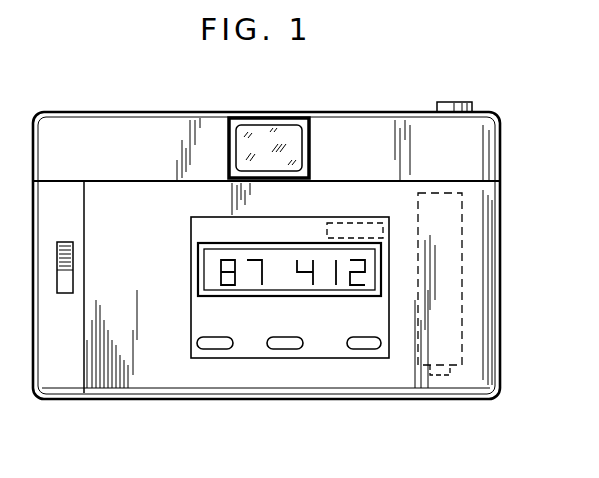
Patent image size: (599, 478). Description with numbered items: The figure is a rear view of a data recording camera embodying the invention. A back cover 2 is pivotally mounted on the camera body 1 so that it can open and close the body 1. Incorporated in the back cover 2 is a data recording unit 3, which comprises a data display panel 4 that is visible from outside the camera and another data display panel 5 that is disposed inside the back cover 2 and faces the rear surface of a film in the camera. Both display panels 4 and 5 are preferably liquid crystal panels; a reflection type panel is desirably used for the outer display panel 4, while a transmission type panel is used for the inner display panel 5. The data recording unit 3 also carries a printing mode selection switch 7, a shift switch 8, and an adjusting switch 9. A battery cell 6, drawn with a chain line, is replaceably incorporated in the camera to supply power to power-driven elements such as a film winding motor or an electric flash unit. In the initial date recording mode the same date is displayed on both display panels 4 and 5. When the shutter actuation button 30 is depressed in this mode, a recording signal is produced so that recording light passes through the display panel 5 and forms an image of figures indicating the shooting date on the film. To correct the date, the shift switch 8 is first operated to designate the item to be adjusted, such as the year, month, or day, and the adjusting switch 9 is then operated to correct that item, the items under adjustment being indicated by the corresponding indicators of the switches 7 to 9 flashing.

The camera body 1 is at (500, 157).
The back cover 2 is at (130, 388).
The data recording unit 3 is at (192, 230).
The data display panel 4 is at (287, 243).
The data display panel 5 is at (357, 223).
The battery cell 6 is at (462, 252).
The printing mode selection switch 7 is at (210, 350).
The shift switch 8 is at (285, 350).
The adjusting switch 9 is at (363, 350).
The shutter actuation button 30 is at (452, 102).